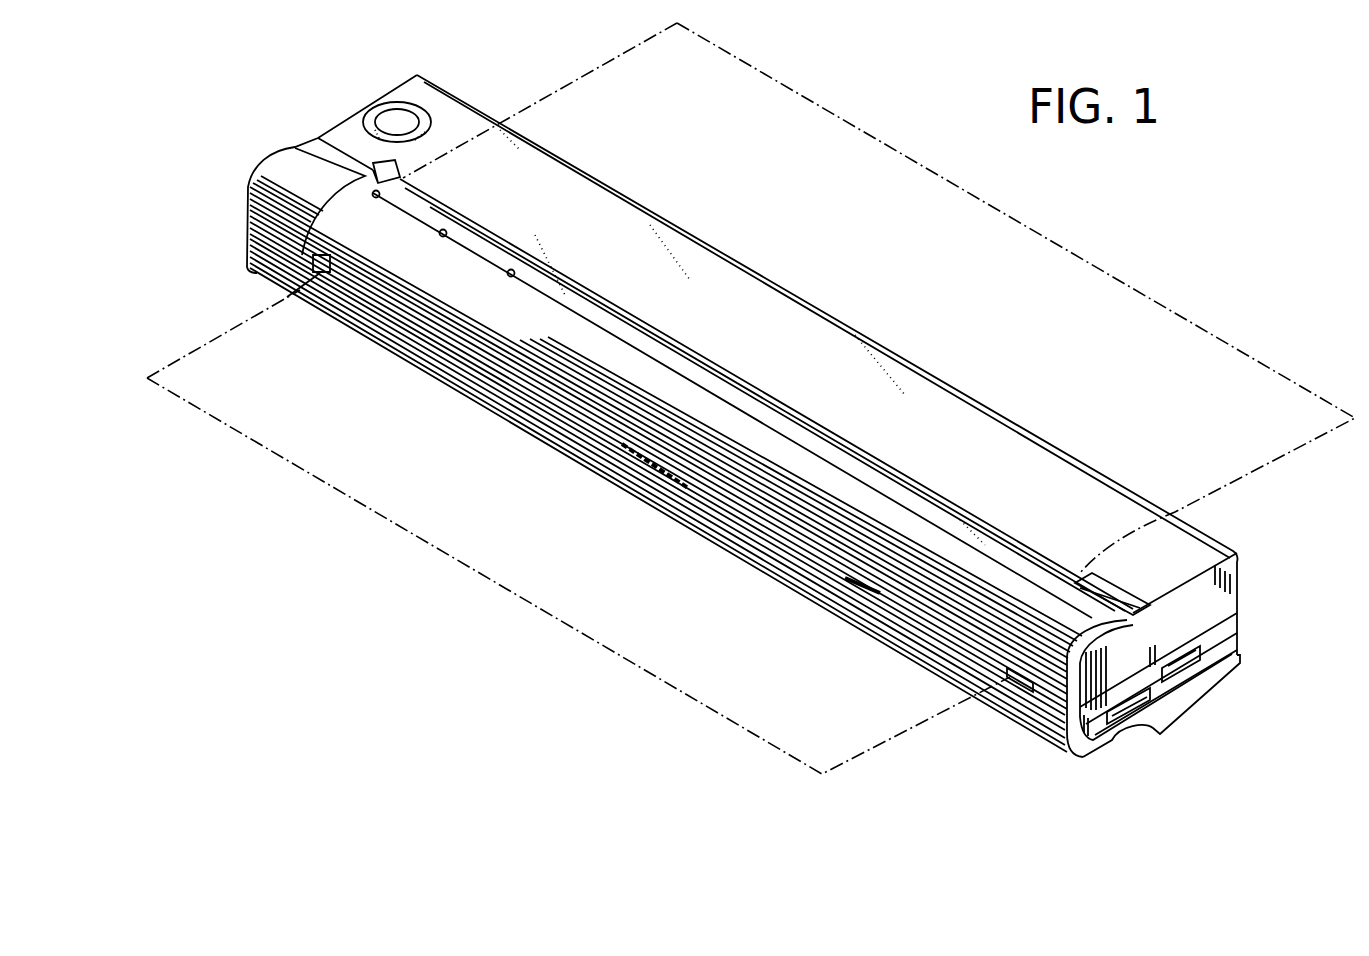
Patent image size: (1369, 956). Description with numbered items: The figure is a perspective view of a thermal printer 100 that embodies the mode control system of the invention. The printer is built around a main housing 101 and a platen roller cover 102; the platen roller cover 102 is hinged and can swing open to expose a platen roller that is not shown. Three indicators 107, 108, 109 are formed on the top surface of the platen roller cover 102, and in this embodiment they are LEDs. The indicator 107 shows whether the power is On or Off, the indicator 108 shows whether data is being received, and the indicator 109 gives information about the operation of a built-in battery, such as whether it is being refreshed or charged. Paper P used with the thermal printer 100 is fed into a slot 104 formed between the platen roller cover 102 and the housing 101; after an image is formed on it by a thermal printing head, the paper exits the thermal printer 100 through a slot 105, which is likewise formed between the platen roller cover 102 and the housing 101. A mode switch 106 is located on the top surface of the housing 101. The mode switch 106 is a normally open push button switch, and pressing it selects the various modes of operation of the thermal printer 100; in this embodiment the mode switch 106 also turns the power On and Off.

The thermal printer 100 is at (1260, 622).
The main housing 101 is at (457, 112).
The platen roller cover 102 is at (800, 518).
The slot 104 is at (725, 378).
The slot 105 is at (607, 432).
The mode switch 106 is at (390, 117).
The indicator 107 is at (400, 193).
The indicator 108 is at (455, 237).
The indicator 109 is at (522, 275).
The recording paper P is at (1130, 290).